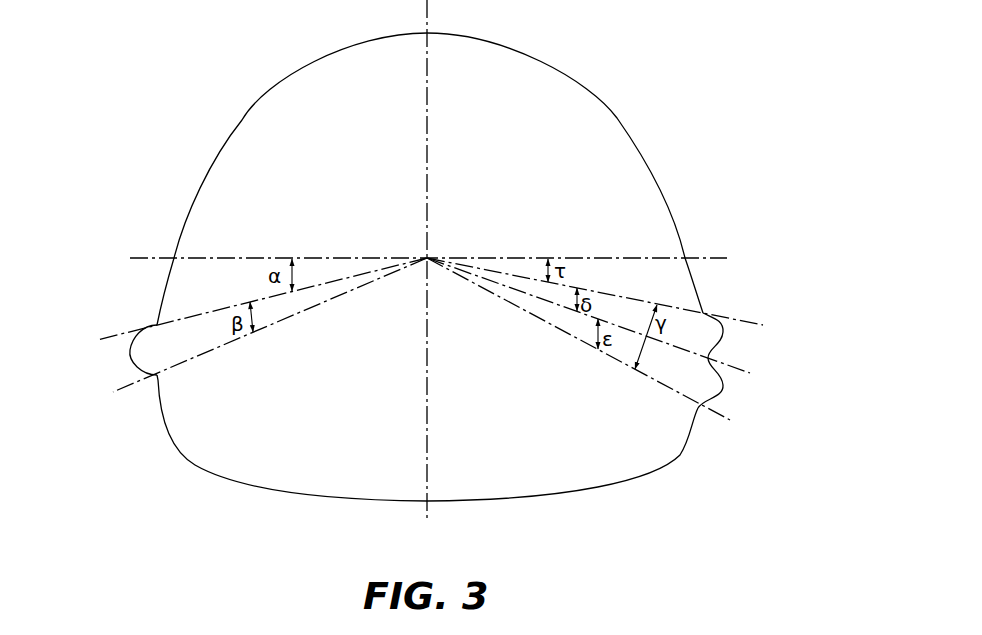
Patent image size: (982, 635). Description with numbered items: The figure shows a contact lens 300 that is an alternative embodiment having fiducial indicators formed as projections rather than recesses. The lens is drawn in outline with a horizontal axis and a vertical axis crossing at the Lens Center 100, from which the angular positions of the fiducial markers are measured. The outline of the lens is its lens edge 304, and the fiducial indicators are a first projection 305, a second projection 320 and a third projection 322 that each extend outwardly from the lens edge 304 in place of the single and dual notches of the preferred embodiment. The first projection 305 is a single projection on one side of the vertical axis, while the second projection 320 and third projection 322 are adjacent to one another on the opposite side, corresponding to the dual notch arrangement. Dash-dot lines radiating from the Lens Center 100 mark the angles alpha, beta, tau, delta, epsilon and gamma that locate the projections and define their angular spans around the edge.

The Lens Center 100 is at (427, 258).
The contact lens 300 is at (423, 267).
The lens edge 304 is at (632, 135).
The first projection 305 is at (121, 359).
The second projection 320 is at (723, 332).
The third projection 322 is at (723, 385).